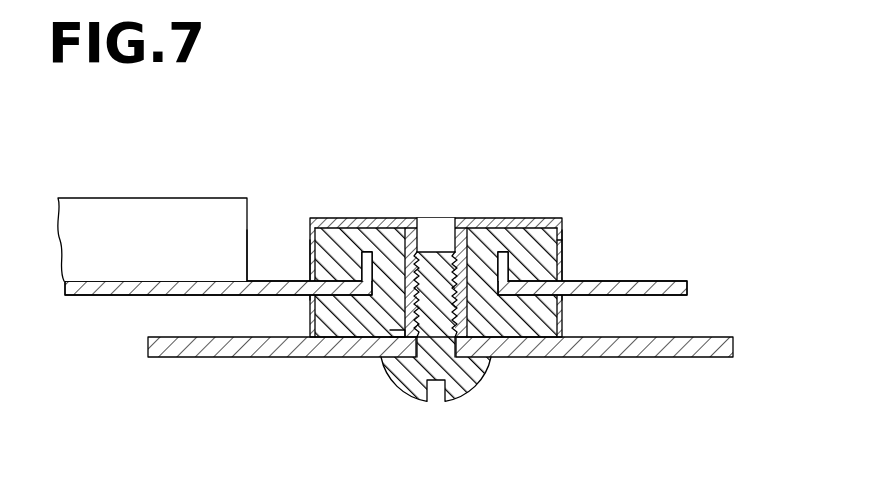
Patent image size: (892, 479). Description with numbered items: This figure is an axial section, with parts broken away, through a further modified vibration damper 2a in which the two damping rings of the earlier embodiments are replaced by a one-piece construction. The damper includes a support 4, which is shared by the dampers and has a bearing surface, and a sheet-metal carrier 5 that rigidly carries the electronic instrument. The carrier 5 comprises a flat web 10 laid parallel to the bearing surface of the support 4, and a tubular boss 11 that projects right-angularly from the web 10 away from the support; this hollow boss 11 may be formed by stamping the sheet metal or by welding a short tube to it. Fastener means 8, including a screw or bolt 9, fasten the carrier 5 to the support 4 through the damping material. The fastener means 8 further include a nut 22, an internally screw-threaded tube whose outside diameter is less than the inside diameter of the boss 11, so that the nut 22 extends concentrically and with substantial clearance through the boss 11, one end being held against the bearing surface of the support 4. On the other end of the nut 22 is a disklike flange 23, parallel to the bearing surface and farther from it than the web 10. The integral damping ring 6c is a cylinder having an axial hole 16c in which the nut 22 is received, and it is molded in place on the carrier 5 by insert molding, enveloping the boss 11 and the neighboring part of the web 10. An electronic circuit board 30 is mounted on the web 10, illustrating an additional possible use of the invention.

The vibration damper 2a is at (498, 224).
The support 4 is at (241, 357).
The carrier 5 is at (134, 297).
The integral damping ring 6c is at (577, 256).
The fastener means 8 is at (460, 267).
The screw or bolt 9 is at (483, 388).
The web 10 is at (256, 280).
The tubular boss 11 is at (310, 277).
The hole 16c is at (392, 342).
The nut 22 is at (499, 217).
The flange 23 is at (546, 217).
The electronic circuit board 30 is at (152, 198).